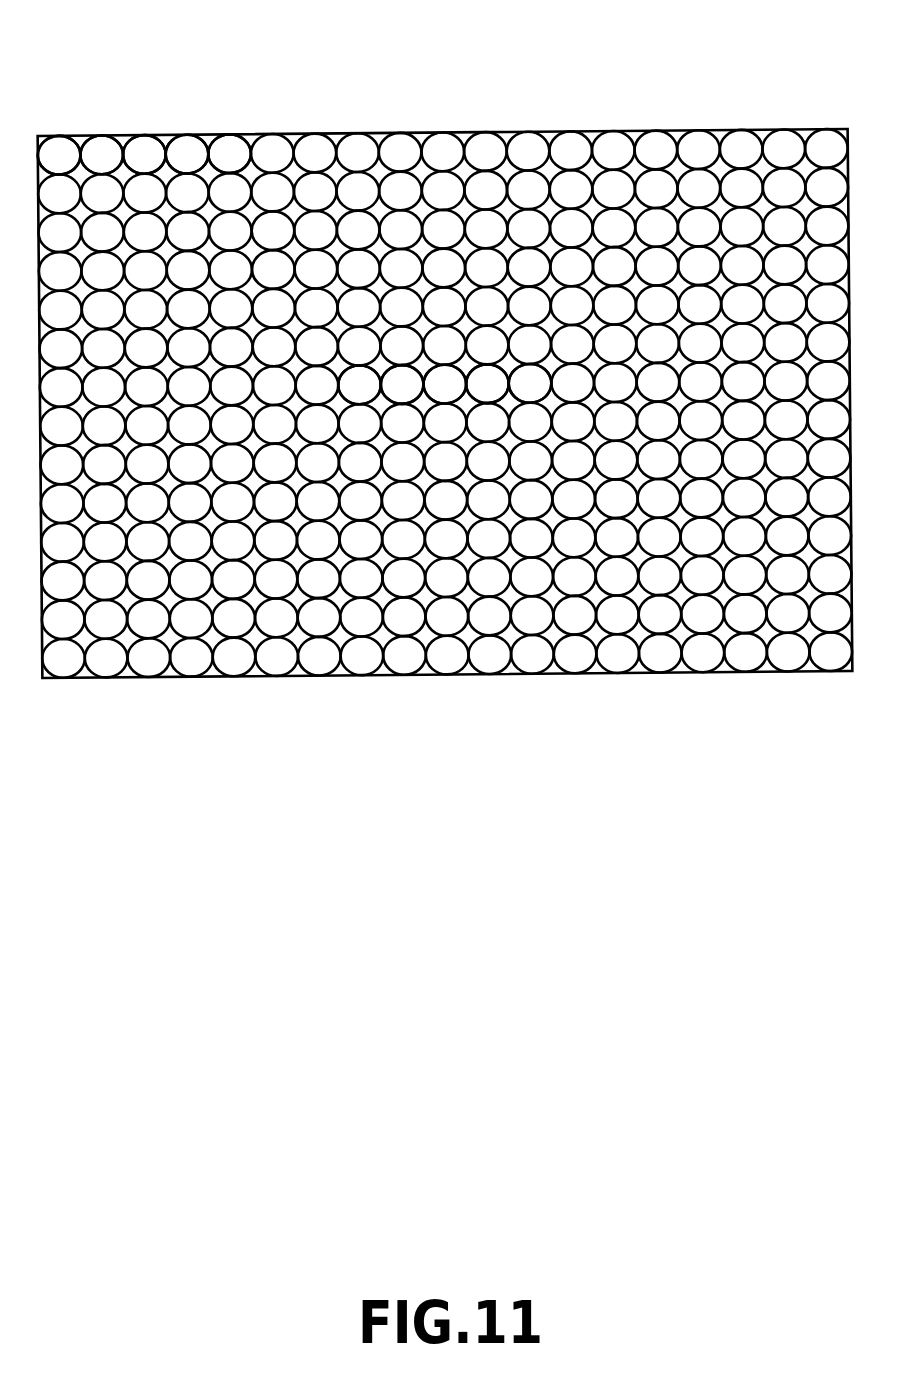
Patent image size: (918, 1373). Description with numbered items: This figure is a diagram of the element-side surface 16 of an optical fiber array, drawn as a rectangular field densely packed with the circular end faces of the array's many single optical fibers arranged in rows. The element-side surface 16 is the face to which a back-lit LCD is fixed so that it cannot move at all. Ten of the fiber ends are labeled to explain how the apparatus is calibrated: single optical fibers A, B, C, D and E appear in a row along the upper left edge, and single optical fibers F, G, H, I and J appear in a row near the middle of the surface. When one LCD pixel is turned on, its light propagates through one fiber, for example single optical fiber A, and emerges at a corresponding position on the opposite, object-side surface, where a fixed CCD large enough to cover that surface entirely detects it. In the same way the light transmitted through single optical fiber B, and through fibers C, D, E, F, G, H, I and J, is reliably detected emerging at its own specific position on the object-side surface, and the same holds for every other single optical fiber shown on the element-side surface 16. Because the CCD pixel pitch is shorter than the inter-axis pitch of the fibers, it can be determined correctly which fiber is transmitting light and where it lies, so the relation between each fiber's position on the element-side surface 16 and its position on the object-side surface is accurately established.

The element-side surface 16 is at (445, 344).
The single optical fiber A is at (59, 155).
The single optical fiber B is at (101, 154).
The single optical fiber C is at (144, 154).
The single optical fiber D is at (187, 154).
The single optical fiber E is at (229, 153).
The single optical fiber F is at (359, 384).
The single optical fiber G is at (402, 384).
The single optical fiber H is at (444, 384).
The single optical fiber I is at (487, 383).
The single optical fiber J is at (530, 383).